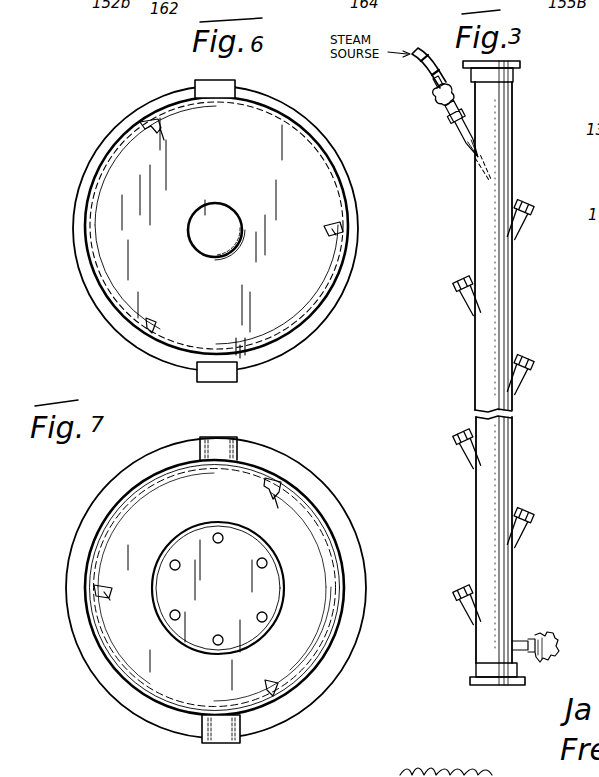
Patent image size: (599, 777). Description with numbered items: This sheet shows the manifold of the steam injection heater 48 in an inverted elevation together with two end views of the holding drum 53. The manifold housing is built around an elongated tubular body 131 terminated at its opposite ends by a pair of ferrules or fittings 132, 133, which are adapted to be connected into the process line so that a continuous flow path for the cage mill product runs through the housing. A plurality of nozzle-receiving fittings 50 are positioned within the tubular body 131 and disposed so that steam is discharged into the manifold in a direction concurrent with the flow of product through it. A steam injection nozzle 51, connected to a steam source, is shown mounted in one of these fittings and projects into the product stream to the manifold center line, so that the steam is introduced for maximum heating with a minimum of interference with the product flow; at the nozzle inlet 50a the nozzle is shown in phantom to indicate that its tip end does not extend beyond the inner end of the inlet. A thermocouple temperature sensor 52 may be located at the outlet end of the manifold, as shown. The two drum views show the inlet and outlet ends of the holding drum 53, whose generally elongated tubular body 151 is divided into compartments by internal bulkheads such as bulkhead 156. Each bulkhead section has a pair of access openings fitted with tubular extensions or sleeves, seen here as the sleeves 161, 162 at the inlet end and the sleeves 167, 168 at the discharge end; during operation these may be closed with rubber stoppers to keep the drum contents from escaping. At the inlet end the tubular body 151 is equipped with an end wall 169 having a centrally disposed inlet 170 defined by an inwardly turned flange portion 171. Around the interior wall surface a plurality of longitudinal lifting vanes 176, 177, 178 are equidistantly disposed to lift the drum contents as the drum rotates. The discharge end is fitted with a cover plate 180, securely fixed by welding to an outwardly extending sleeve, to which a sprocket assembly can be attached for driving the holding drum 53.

In FIG. 6, the tubular body 151 is at (73, 262).
In FIG. 6, the holding drum 53 is at (358, 266).
In FIG. 7, the holding drum 53 is at (367, 578).
In FIG. 6, the internal bulkhead 156 is at (338, 160).
In FIG. 6, the tubular extension or sleeve 161 is at (200, 84).
In FIG. 6, the tubular extension or sleeve 162 is at (237, 370).
In FIG. 6, the end wall 169 is at (252, 333).
In FIG. 6, the inlet 170 is at (218, 250).
In FIG. 6, the inwardly turned flange portion 171 is at (213, 204).
In FIG. 6, the longitudinal lifting vane 176 is at (152, 318).
In FIG. 7, the longitudinal lifting vane 176 is at (272, 680).
In FIG. 6, the longitudinal lifting vane 177 is at (166, 130).
In FIG. 7, the longitudinal lifting vane 177 is at (278, 506).
In FIG. 6, the longitudinal lifting vane 178 is at (329, 235).
In FIG. 7, the longitudinal lifting vane 178 is at (106, 602).
In FIG. 7, the tubular extension or sleeve 167 is at (213, 437).
In FIG. 7, the tubular extension or sleeve 168 is at (203, 742).
In FIG. 7, the cover plate 180 is at (182, 555).
In FIG. 3, the steam injection heater 48 is at (514, 308).
In FIG. 3, the nozzle-receiving fitting 50 is at (524, 223).
In FIG. 3, the nozzle inlet 50a is at (462, 140).
In FIG. 3, the steam injection nozzle 51 is at (438, 113).
In FIG. 3, the thermocouple temperature sensor 52 is at (545, 633).
In FIG. 3, the elongated tubular body 131 is at (477, 238).
In FIG. 3, the ferrule or fitting 132 is at (521, 65).
In FIG. 3, the ferrule or fitting 133 is at (482, 686).